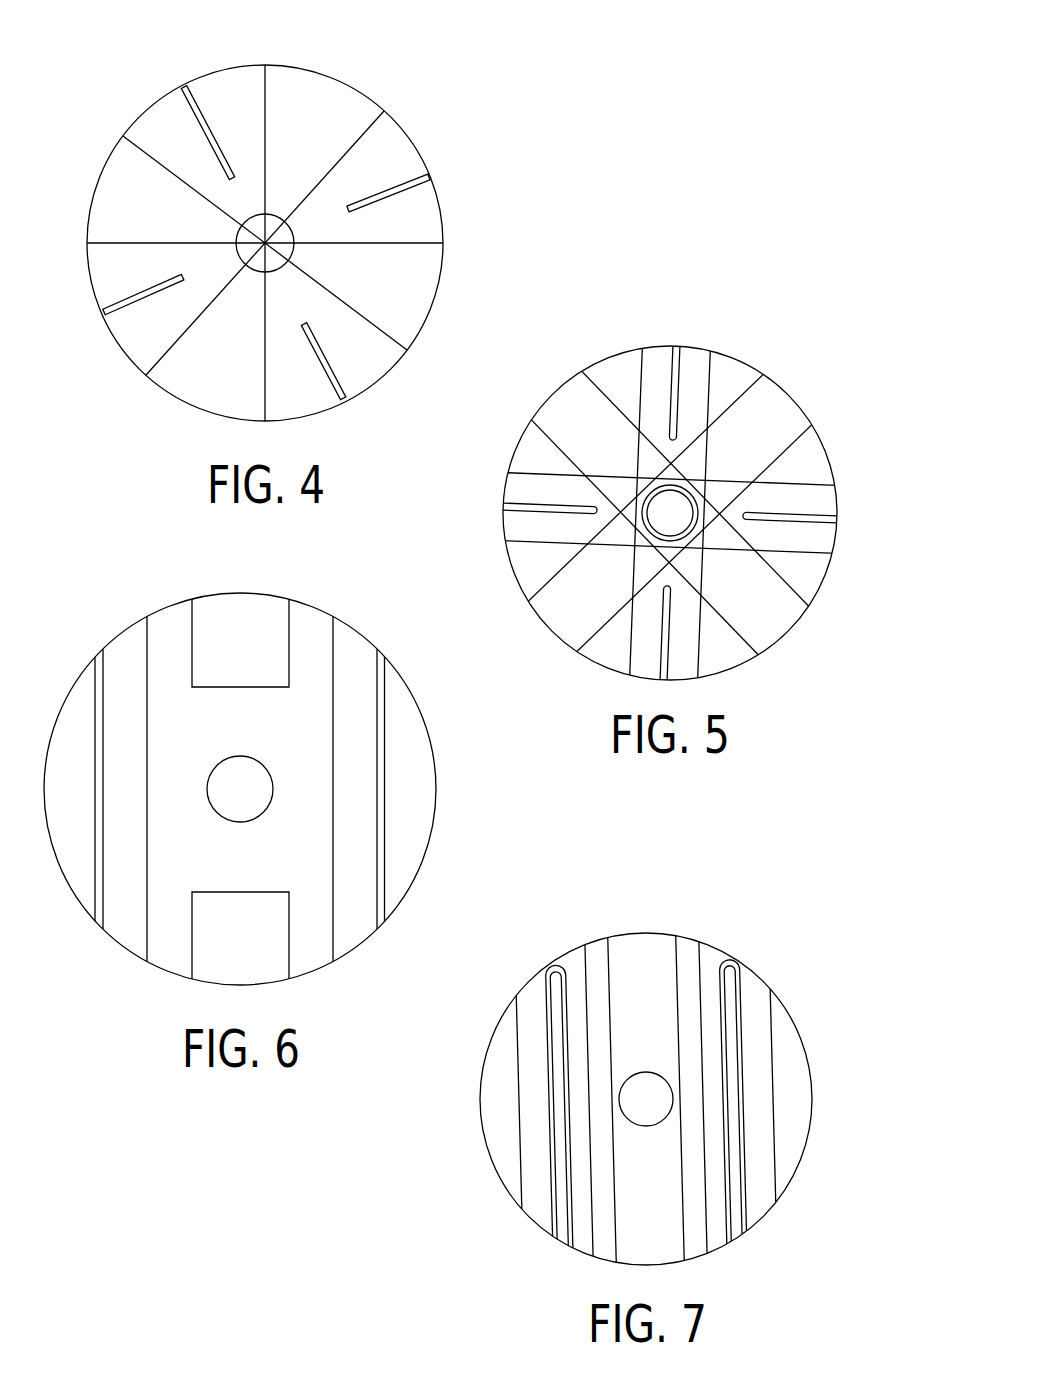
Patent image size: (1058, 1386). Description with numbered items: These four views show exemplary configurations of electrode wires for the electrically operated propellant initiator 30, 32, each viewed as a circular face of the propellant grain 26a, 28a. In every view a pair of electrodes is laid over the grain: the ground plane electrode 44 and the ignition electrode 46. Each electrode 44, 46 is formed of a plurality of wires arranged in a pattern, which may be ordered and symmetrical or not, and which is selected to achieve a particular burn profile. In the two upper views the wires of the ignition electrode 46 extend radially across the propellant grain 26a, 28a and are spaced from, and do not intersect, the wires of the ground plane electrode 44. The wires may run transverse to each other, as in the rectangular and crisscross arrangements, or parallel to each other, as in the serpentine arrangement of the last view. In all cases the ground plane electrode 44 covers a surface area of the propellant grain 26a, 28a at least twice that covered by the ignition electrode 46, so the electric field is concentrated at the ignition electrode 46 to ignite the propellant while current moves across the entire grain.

In FIG. 4, the propellant grain 26a is at (332, 243).
In FIG. 4, the propellant grain 28a is at (413, 272).
In FIG. 4, the initiator 30 is at (311, 214).
In FIG. 5, the initiator 30 is at (670, 513).
In FIG. 6, the initiator 30 is at (306, 757).
In FIG. 7, the initiator 30 is at (716, 1083).
In FIG. 4, the initiator 32 is at (311, 214).
In FIG. 5, the initiator 32 is at (670, 513).
In FIG. 6, the initiator 32 is at (306, 757).
In FIG. 7, the initiator 32 is at (716, 1083).
In FIG. 4, the ground plane electrode 44 is at (197, 119).
In FIG. 4, the ignition electrode 46 is at (147, 158).